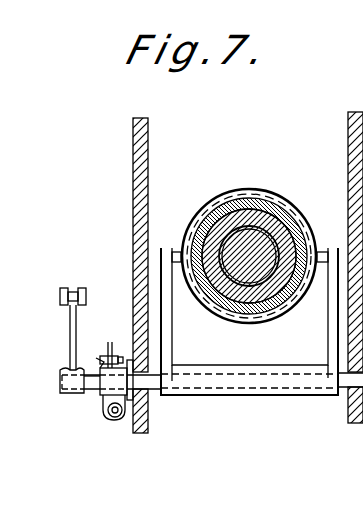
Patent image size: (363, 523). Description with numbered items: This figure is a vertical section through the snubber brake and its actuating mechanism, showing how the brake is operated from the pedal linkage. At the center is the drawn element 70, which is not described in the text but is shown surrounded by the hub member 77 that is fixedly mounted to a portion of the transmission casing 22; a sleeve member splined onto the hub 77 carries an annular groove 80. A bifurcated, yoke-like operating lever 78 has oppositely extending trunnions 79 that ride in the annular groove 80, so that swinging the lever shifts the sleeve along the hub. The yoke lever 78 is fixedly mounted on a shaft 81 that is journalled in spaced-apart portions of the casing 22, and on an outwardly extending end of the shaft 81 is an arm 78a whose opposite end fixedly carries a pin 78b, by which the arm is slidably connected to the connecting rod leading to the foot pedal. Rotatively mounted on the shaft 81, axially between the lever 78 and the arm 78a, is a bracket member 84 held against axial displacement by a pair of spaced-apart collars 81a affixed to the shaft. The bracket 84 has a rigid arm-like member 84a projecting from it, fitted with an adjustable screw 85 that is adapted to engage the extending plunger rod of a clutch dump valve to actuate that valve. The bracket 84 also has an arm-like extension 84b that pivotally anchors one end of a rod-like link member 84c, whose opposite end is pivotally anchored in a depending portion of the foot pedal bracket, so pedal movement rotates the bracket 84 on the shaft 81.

The transmission casing 22 is at (148, 149).
The shaft 70 is at (283, 221).
The hub member 77 is at (258, 220).
The yoke-like operating lever 78 is at (172, 326).
The arm 78a is at (70, 334).
The pin 78b is at (60, 296).
The trunnions 79 is at (172, 246).
The annular groove 80 is at (236, 190).
The shaft 81 is at (342, 393).
The collars 81a is at (125, 378).
The bracket member 84 is at (98, 387).
The arm-like member 84a is at (112, 421).
The arm-like extension 84b is at (110, 356).
The rod-like link member 84c is at (97, 360).
The adjustable screw 85 is at (108, 413).